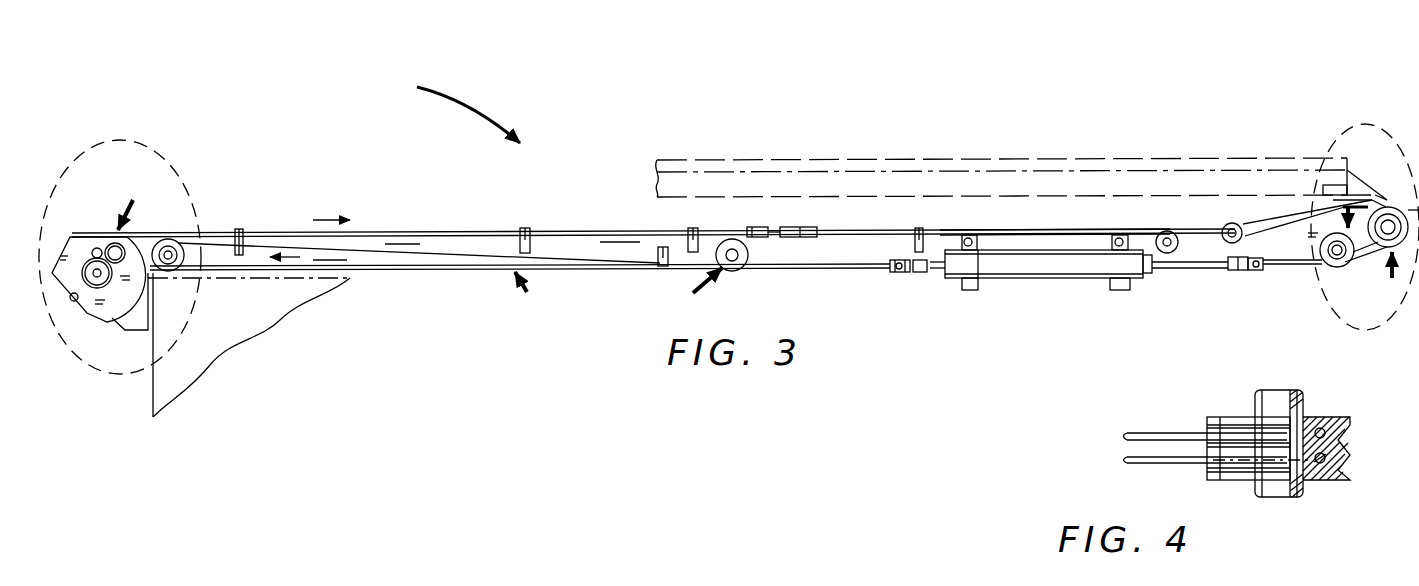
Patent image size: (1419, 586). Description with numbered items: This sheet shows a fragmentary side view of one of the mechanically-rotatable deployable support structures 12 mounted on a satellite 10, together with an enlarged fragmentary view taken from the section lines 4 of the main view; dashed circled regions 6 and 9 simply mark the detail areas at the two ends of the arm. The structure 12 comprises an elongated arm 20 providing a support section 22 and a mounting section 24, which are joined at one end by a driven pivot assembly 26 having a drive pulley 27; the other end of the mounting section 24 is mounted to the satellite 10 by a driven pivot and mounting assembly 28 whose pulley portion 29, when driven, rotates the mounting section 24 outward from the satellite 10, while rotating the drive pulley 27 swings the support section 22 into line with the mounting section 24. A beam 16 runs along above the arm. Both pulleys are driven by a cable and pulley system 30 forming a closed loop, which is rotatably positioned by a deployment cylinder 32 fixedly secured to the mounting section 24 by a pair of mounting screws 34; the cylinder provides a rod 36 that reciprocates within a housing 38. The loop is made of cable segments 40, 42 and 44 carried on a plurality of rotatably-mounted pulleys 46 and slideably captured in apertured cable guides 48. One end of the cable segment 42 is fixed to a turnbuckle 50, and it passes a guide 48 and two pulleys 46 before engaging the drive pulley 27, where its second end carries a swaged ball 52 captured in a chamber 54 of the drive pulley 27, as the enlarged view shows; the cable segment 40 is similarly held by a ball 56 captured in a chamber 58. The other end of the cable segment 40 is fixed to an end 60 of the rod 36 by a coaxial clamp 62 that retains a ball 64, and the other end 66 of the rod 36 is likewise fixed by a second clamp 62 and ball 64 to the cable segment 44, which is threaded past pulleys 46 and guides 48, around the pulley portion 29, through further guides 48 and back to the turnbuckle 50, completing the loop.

In FIG. 3, the section lines 4— 4 is at (1381, 228).
In FIG. 3, the encircled detail area 6 is at (1342, 127).
In FIG. 3, the encircled detail area 9 is at (187, 175).
In FIG. 3, the satellite 10 is at (247, 337).
In FIG. 3, the mechanically-rotatable deployable support structure 12 is at (448, 108).
In FIG. 3, the beam 16 is at (913, 158).
In FIG. 3, the elongated arm 20 is at (524, 297).
In FIG. 3, the support section 22 is at (1175, 178).
In FIG. 3, the mounting section 24 is at (819, 258).
In FIG. 3, the driven pivot assembly 26 is at (1391, 280).
In FIG. 4, the driven pivot assembly 26 is at (1230, 480).
In FIG. 3, the drive pulley 27 is at (1389, 206).
In FIG. 3, the driven pivot and mounting assembly 28 is at (138, 202).
In FIG. 3, the pulley portion 29 is at (73, 250).
In FIG. 3, the cable and pulley system 30 is at (695, 294).
In FIG. 3, the deployment cylinder 32 is at (1079, 266).
In FIG. 3, the mounting screws 34 is at (970, 235).
In FIG. 3, the rod 36 is at (1208, 269).
In FIG. 3, the housing 38 is at (1017, 274).
In FIG. 3, the cable segment 40 is at (1307, 267).
In FIG. 4, the cable segment 40 is at (1147, 463).
In FIG. 3, the cable segment 42 is at (1032, 230).
In FIG. 4, the cable segment 42 is at (1155, 433).
In FIG. 3, the cable segment 44 is at (88, 310).
In FIG. 3, the pulleys 46 is at (157, 243).
In FIG. 3, the cable guides 48 is at (243, 232).
In FIG. 3, the turnbuckle 50 is at (790, 227).
In FIG. 4, the ball 52 is at (1346, 439).
In FIG. 4, the chamber 54 is at (1322, 430).
In FIG. 4, the ball 56 is at (1343, 467).
In FIG. 4, the chamber 58 is at (1323, 470).
In FIG. 3, the end of the rod 60 is at (1227, 272).
In FIG. 3, the coaxial clamp 62 is at (892, 273).
In FIG. 3, the ball 64 is at (898, 260).
In FIG. 3, the other end of the rod 66 is at (923, 273).